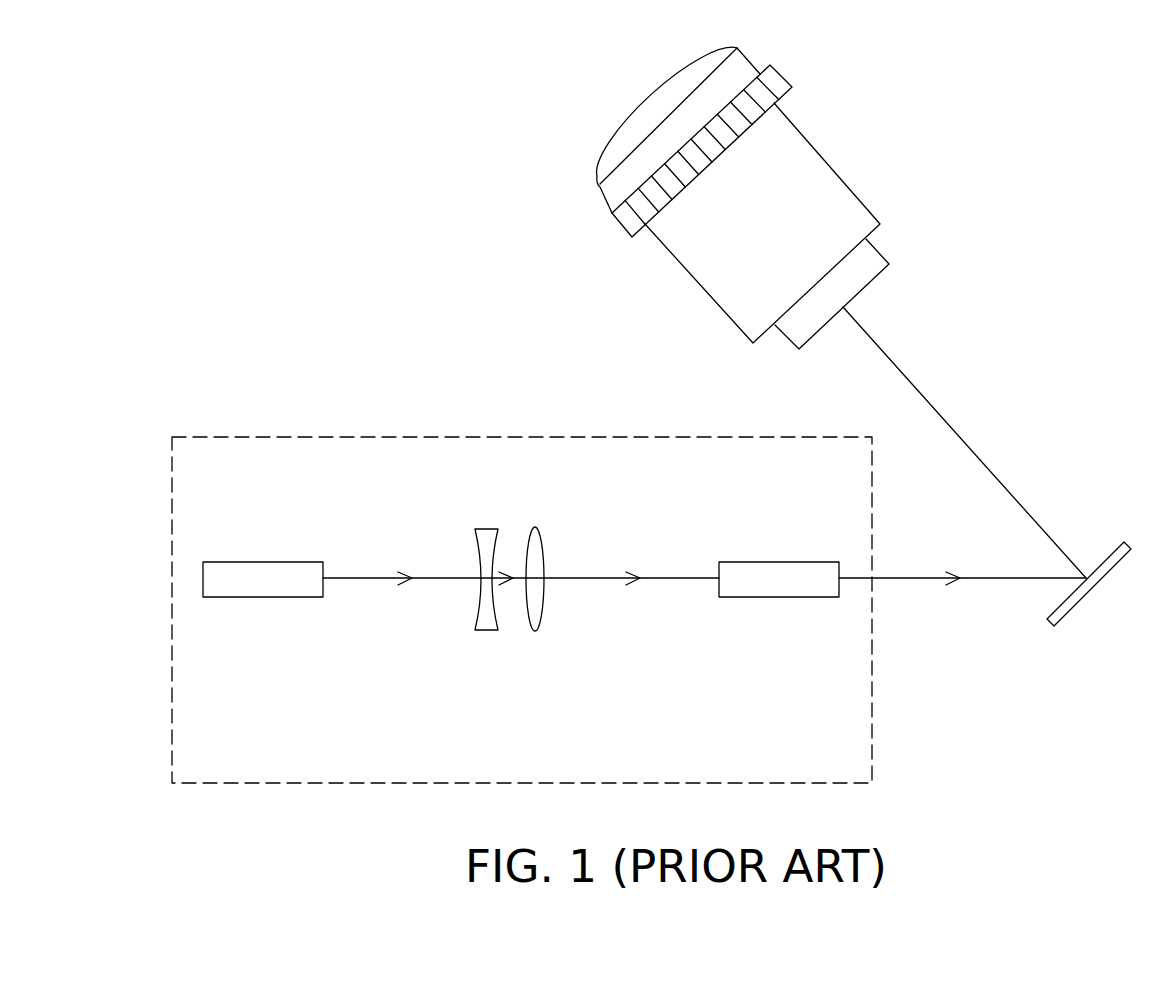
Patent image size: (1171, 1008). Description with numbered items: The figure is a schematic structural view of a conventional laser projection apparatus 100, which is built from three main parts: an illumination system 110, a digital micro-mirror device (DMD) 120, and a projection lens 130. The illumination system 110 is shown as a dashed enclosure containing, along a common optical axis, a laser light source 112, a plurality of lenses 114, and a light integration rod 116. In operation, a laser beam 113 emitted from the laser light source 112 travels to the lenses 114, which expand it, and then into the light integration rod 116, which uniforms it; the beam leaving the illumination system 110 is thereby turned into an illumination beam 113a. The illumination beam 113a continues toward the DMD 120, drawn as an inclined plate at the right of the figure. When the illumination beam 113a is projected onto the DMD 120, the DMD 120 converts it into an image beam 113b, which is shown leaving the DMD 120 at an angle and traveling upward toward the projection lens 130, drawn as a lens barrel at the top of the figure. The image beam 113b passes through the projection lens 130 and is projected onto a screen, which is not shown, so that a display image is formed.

The laser projection apparatus 100 is at (1077, 810).
The illumination system 110 is at (502, 437).
The laser light source 112 is at (265, 583).
The laser beam 113 is at (363, 580).
The illumination beam 113a is at (925, 580).
The image beam 113b is at (945, 415).
The lenses 114 is at (533, 618).
The light integration rod 116 is at (774, 583).
The digital micro-mirror device 120 is at (1072, 598).
The projection lens 130 is at (808, 197).